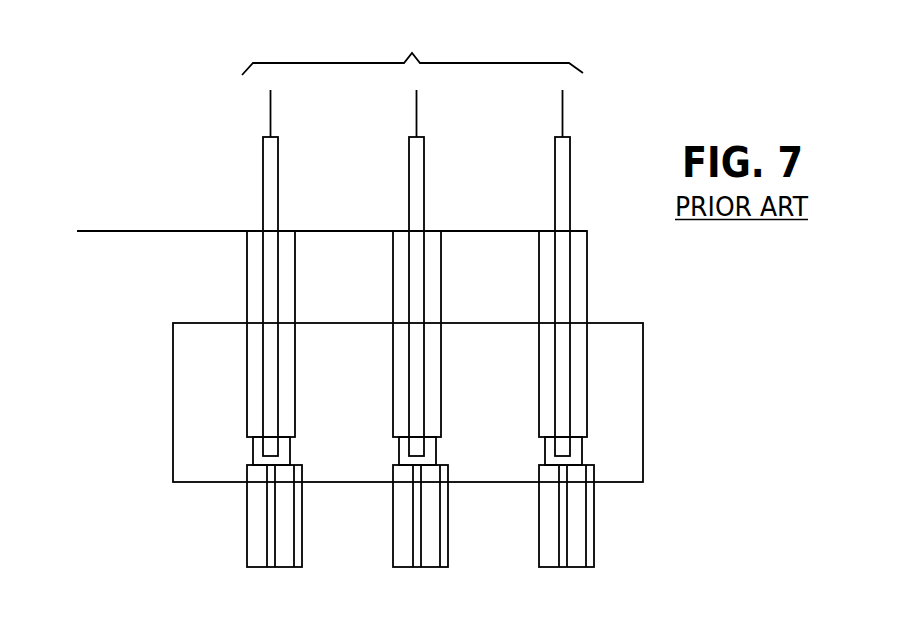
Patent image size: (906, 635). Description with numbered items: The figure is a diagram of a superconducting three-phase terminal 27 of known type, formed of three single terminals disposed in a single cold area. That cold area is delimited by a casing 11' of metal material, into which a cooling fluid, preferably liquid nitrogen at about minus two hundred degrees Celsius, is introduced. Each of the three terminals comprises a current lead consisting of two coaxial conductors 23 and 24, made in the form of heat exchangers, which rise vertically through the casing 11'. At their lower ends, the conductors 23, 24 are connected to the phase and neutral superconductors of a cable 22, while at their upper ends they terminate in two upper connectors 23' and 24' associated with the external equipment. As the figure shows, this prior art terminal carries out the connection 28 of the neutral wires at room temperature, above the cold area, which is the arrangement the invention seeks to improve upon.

The three-phase terminal 27 is at (412, 49).
The connection of the neutral wires 28 is at (131, 230).
The casing 11' is at (445, 393).
The upper connector 23' is at (457, 116).
The coaxial conductor 23 is at (386, 296).
The coaxial conductor 24 is at (444, 348).
The upper connector 24' is at (417, 203).
The cable 22 is at (247, 516).